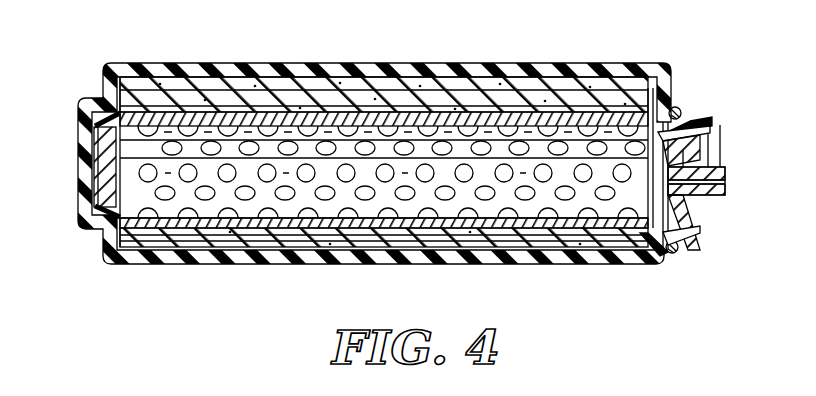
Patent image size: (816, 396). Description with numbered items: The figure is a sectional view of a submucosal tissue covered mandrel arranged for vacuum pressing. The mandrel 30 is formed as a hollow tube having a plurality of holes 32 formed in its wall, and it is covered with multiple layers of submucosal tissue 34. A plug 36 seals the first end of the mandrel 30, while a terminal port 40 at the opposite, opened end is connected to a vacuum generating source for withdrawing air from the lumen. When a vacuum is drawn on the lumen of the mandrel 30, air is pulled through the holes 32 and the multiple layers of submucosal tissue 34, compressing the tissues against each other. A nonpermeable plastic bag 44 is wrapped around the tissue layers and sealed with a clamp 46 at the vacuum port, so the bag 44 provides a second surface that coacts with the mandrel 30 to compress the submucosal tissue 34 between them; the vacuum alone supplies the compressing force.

The mandrel 30 is at (427, 212).
The holes 32 is at (287, 200).
The submucosal tissue 34 is at (314, 90).
The plug 36 is at (100, 173).
The terminal port 40 is at (718, 165).
The plastic bag 44 is at (473, 74).
The clamp 46 is at (678, 106).